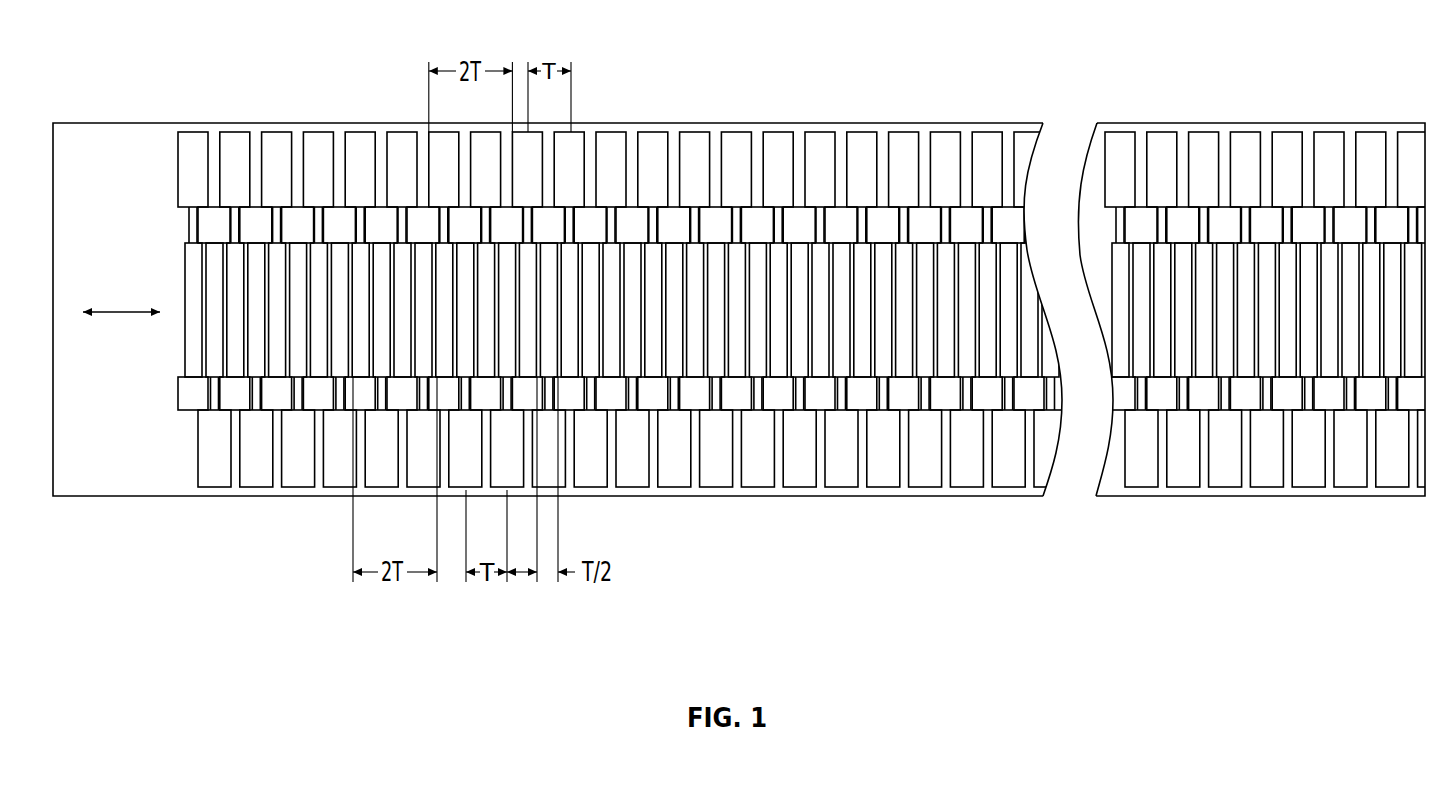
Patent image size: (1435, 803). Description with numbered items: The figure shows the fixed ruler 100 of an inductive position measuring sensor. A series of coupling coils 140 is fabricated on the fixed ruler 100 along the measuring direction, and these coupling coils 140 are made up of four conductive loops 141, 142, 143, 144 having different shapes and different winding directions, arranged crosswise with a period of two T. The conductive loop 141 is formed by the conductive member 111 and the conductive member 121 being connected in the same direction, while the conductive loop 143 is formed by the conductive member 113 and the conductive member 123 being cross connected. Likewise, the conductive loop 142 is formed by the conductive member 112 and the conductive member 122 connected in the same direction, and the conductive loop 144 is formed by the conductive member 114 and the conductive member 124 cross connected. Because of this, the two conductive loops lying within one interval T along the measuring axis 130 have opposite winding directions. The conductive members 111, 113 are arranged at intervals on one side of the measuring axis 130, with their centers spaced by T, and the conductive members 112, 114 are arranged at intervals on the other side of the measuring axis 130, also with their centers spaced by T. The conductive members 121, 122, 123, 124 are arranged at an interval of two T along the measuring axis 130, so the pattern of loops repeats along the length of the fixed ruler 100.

The fixed ruler 100 is at (103, 476).
The conductive member 111 is at (200, 213).
The conductive member 112 is at (212, 405).
The conductive member 113 is at (246, 213).
The conductive member 114 is at (254, 405).
The conductive member 121 is at (186, 383).
The conductive member 122 is at (229, 240).
The conductive member 123 is at (228, 383).
The conductive member 124 is at (270, 240).
The measuring axis 130 is at (125, 309).
The coupling coils 140 is at (333, 383).
The conductive loop 141 is at (277, 292).
The conductive loop 142 is at (298, 255).
The conductive loop 143 is at (319, 292).
The conductive loop 144 is at (340, 260).